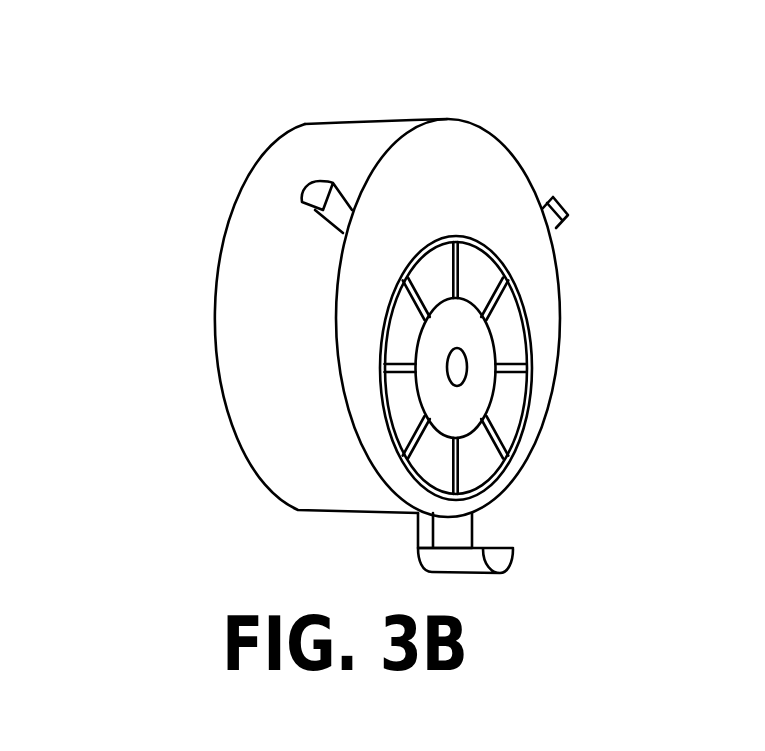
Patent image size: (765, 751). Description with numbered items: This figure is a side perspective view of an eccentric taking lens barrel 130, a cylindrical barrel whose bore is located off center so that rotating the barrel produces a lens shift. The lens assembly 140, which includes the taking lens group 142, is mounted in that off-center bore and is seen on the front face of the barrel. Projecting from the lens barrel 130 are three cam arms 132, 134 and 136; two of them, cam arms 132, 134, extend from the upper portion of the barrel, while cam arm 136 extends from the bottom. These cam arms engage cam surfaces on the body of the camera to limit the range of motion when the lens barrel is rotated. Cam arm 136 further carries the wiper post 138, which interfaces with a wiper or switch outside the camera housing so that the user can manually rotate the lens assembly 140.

The eccentric taking lens barrel 130 is at (303, 123).
The cam arm 132 is at (303, 193).
The cam arm 134 is at (553, 198).
The cam arm 136 is at (472, 527).
The wiper post 138 is at (513, 550).
The lens assembly 140 is at (527, 321).
The taking lens group 142 is at (447, 365).